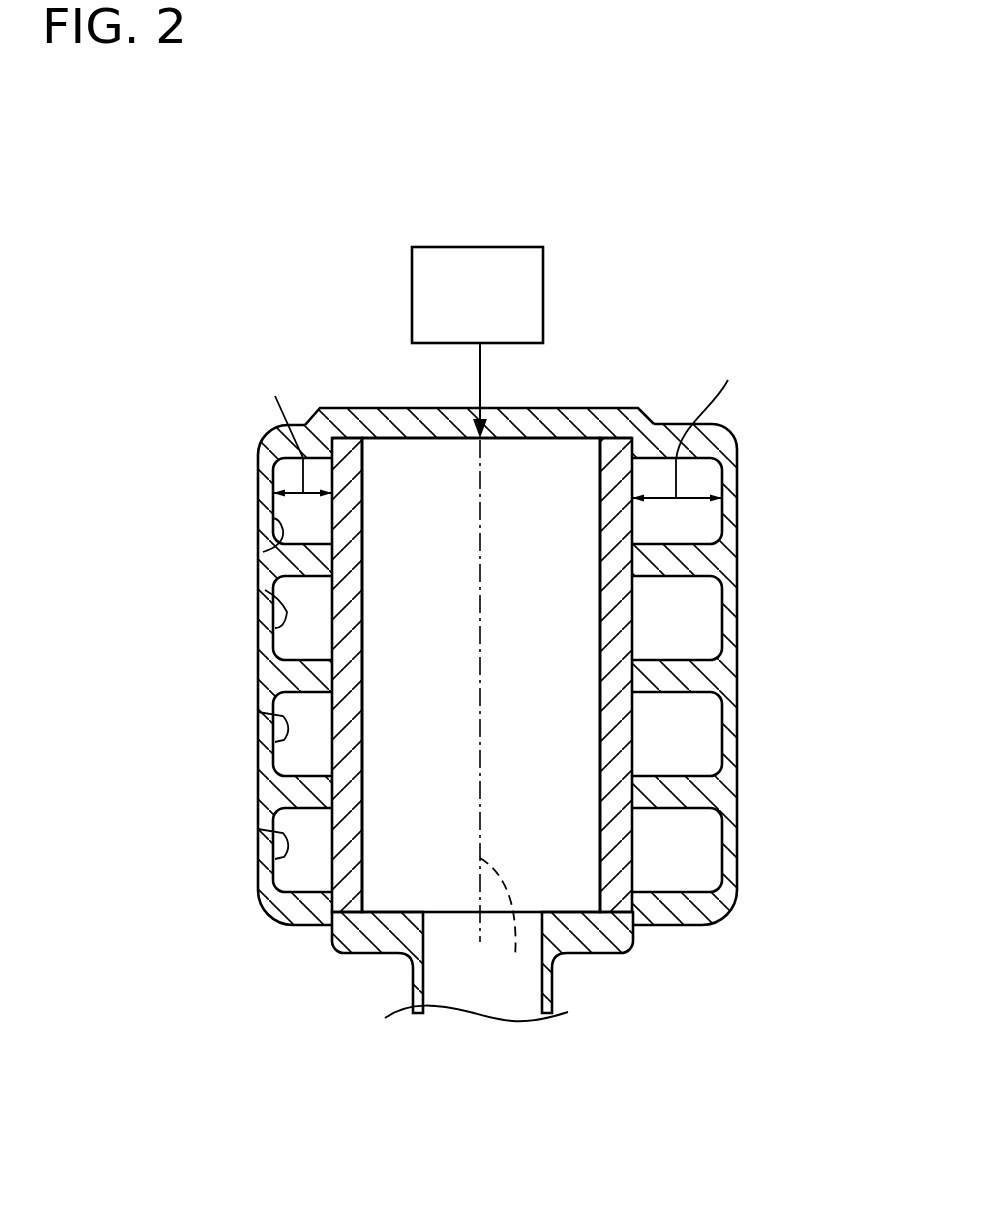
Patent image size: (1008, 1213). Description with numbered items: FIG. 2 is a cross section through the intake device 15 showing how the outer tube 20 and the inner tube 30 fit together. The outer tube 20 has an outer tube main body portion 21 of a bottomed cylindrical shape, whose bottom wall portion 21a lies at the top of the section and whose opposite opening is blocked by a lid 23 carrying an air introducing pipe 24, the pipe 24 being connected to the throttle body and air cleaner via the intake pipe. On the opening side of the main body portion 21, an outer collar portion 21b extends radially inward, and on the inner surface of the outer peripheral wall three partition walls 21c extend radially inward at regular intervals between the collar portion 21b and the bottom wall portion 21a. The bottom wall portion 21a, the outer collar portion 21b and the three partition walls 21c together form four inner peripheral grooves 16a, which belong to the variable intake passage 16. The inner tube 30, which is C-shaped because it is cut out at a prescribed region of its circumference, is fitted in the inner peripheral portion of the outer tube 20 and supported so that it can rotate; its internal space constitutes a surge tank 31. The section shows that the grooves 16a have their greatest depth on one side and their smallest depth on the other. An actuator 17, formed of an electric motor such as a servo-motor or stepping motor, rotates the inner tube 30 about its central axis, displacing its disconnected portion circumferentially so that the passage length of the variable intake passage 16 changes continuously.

The vibration isolating mount 15 is at (511, 696).
The variable intake passage 16 is at (660, 607).
The inner peripheral groove 16a is at (265, 590).
The actuator 17 is at (480, 247).
The outer tube 20 is at (493, 674).
The outer tube main body portion 21 is at (548, 674).
The bottom wall portion 21a is at (592, 420).
The outer collar portion 21b is at (312, 915).
The partition wall 21c is at (298, 568).
The lid 23 is at (612, 965).
The air introducing pipe 24 is at (553, 1000).
The inner tube 30 is at (532, 991).
The surge tank 31 is at (405, 490).